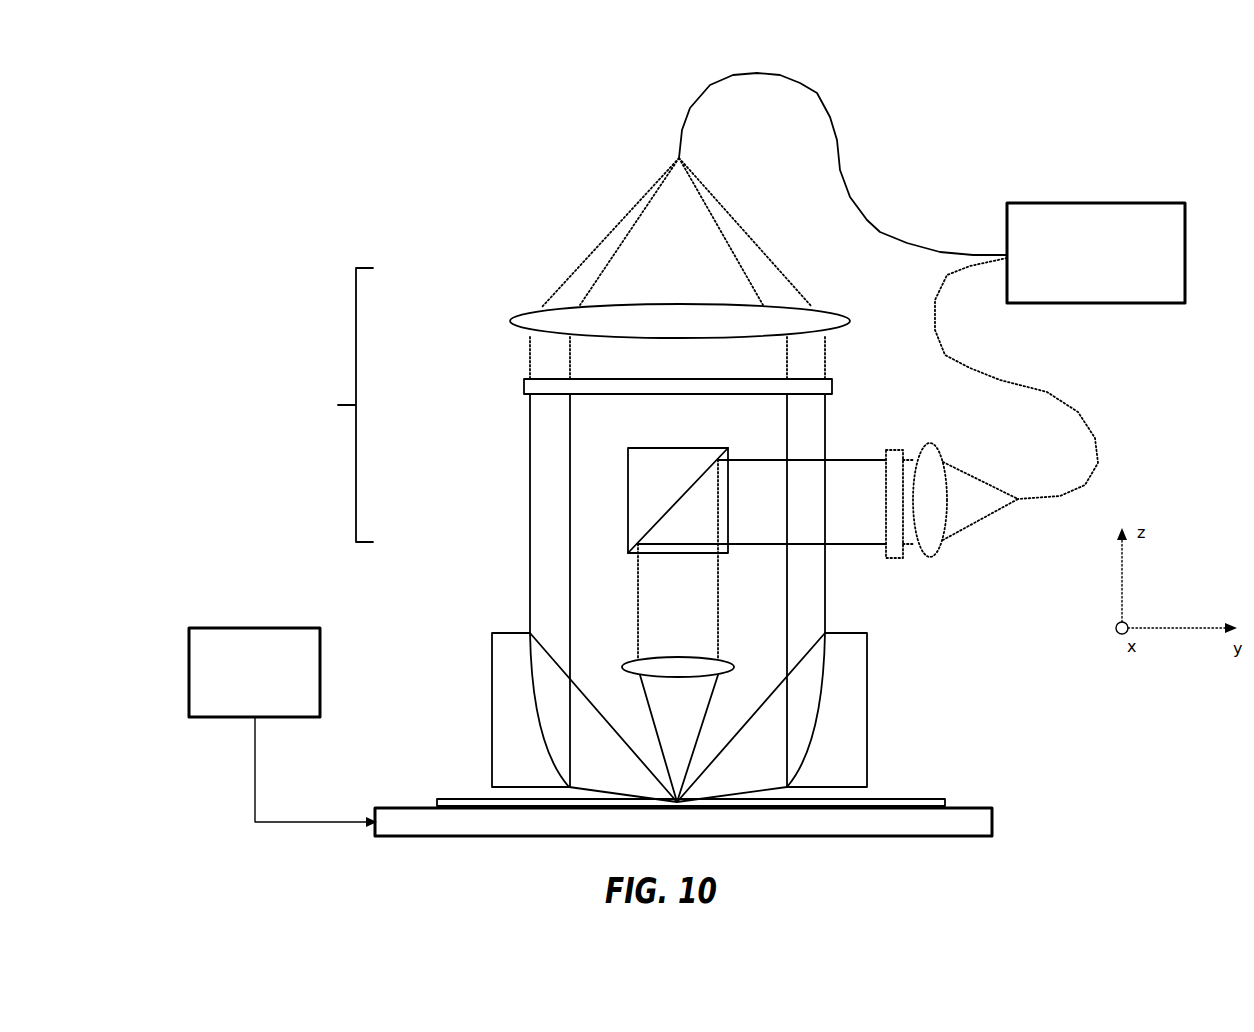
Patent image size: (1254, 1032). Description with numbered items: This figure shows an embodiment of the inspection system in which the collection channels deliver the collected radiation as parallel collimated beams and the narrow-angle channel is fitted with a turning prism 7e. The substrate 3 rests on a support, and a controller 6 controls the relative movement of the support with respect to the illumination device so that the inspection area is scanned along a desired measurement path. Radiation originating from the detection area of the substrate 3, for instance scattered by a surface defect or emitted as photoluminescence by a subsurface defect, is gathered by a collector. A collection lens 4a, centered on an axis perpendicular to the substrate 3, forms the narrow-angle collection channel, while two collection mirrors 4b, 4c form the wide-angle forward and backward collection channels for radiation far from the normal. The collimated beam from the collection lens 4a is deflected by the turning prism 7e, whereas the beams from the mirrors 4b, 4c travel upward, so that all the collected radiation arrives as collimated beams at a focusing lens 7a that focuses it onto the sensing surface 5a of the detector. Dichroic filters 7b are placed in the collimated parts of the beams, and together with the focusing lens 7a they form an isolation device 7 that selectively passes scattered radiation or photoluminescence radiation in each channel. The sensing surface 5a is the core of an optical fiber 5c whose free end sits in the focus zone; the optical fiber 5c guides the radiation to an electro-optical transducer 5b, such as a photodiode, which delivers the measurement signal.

The substrate 3 is at (483, 798).
The collection lens 4a is at (640, 668).
The collection mirror 4b is at (867, 675).
The collection mirror 4c is at (492, 738).
The sensing surface 5a is at (679, 158).
The electro-optical transducer 5b is at (1007, 228).
The optical fiber 5c is at (688, 120).
The controller 6 is at (207, 717).
The isolation device 7 is at (342, 405).
The focusing lens 7a is at (510, 320).
The dichroic filter 7b is at (524, 386).
The turning prism 7e is at (628, 500).